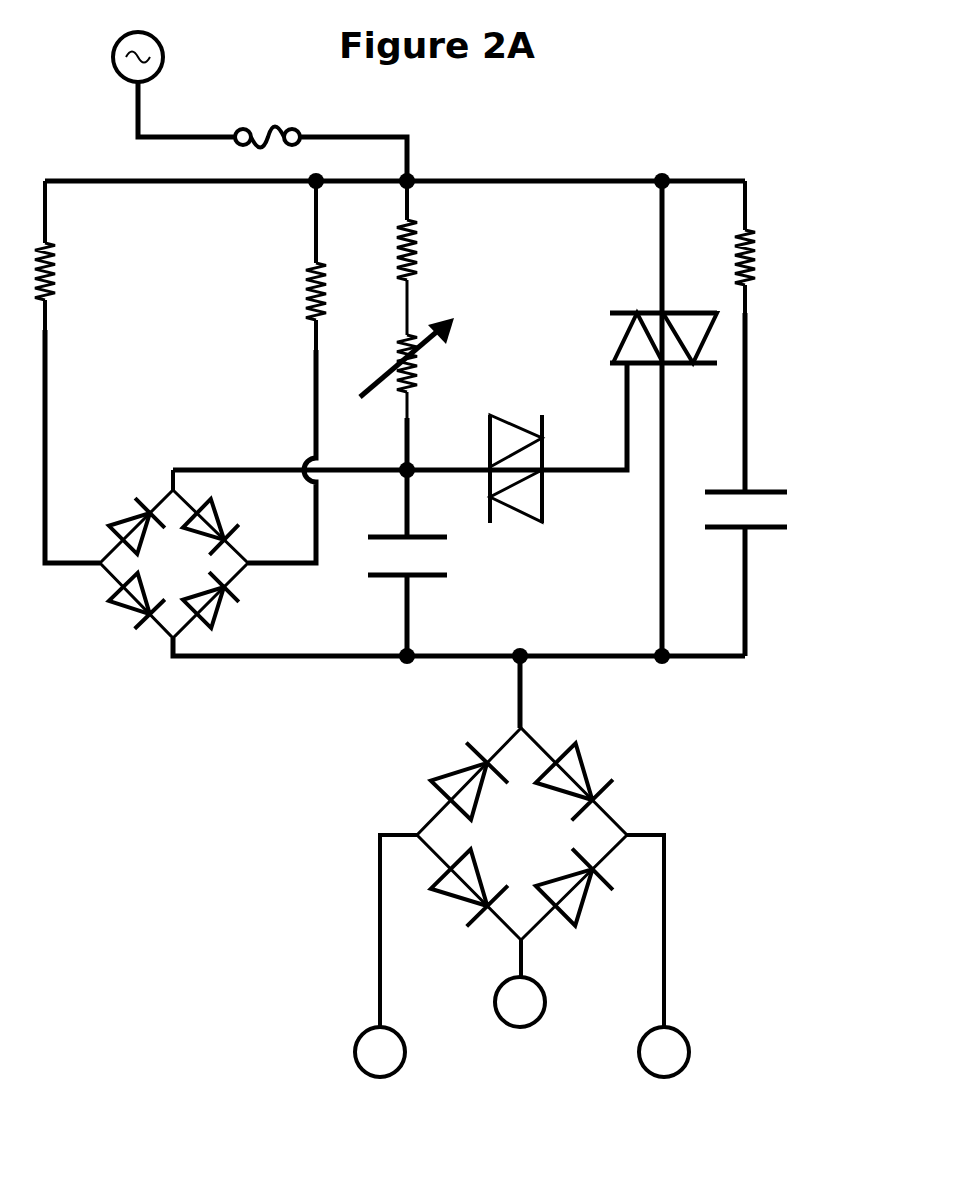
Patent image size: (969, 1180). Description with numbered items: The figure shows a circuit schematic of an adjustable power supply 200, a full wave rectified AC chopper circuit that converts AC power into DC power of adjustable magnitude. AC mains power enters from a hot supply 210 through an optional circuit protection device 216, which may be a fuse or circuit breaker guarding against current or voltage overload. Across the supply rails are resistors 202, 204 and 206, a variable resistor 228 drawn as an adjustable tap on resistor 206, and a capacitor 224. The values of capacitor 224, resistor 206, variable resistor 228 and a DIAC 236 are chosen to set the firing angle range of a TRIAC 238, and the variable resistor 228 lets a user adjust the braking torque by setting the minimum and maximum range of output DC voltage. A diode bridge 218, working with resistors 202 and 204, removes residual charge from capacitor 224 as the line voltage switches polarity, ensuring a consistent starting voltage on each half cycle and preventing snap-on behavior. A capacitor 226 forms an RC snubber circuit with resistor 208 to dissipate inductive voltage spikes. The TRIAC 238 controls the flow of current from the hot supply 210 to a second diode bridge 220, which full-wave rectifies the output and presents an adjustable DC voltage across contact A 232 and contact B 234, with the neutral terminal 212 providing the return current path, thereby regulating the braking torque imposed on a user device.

The adjustable power supply 200 is at (640, 140).
The resistor 202 is at (70, 237).
The resistor 204 is at (298, 267).
The resistor 206 is at (435, 252).
The resistor 208 is at (767, 230).
The hot supply 210 is at (118, 97).
The neutral terminal 212 is at (520, 1045).
The optional circuit protection device 216 is at (267, 118).
The diode bridge 218 is at (140, 648).
The diode bridge 220 is at (423, 784).
The capacitor 224 is at (447, 558).
The capacitor 226 is at (805, 432).
The variable resistor 228 is at (388, 398).
The contact A 232 is at (350, 1007).
The contact B 234 is at (689, 1005).
The DIAC 236 is at (478, 530).
The TRIAC 238 is at (630, 306).